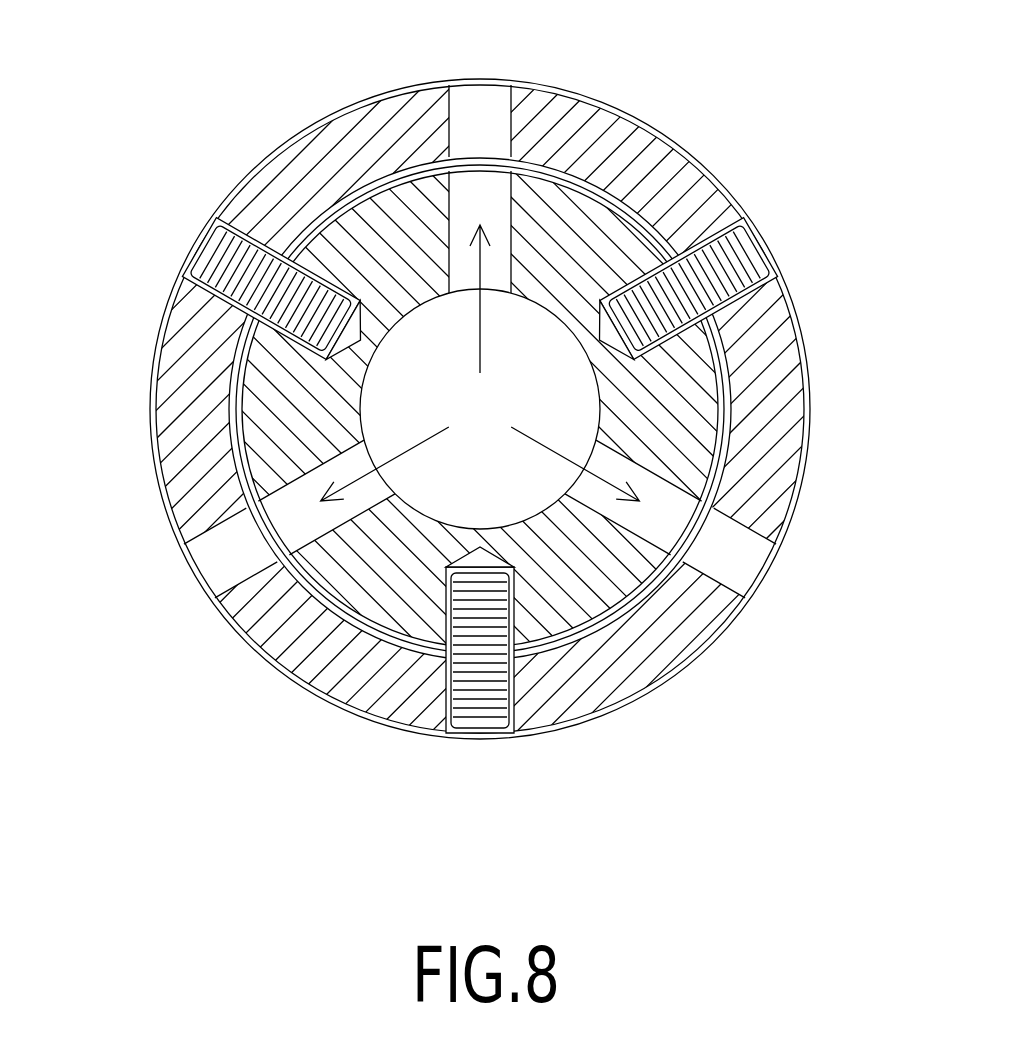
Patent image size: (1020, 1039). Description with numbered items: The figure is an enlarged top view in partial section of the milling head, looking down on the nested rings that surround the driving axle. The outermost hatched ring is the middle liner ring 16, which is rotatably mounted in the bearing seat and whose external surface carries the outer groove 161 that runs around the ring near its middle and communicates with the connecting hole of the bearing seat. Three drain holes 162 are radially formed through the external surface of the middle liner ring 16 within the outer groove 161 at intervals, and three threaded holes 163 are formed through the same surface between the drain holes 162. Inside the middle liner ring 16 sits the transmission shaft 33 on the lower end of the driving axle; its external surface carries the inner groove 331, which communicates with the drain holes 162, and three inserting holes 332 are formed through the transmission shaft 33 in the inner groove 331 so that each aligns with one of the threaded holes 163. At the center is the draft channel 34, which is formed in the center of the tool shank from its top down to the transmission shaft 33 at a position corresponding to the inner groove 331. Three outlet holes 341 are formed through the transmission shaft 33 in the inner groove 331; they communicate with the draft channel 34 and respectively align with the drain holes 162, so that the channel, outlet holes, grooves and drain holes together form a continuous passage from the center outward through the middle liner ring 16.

The middle liner ring 16 is at (176, 396).
The outer groove 161 is at (287, 141).
The drain holes 162 is at (508, 91).
The threaded holes 163 is at (228, 236).
The transmission shaft 33 is at (690, 387).
The inner groove 331 is at (722, 446).
The inserting holes 332 is at (650, 283).
The draft channel 34 is at (362, 397).
The outlet holes 341 is at (494, 278).